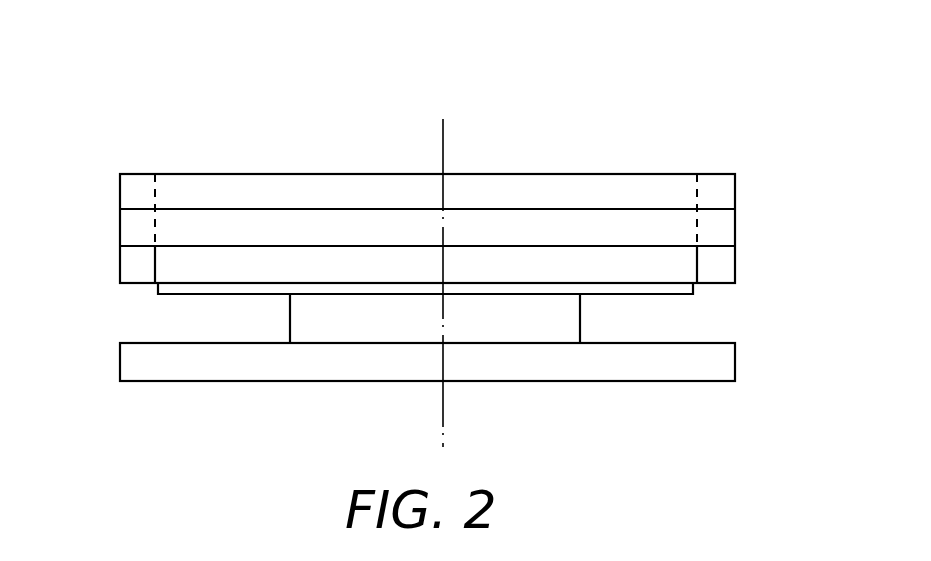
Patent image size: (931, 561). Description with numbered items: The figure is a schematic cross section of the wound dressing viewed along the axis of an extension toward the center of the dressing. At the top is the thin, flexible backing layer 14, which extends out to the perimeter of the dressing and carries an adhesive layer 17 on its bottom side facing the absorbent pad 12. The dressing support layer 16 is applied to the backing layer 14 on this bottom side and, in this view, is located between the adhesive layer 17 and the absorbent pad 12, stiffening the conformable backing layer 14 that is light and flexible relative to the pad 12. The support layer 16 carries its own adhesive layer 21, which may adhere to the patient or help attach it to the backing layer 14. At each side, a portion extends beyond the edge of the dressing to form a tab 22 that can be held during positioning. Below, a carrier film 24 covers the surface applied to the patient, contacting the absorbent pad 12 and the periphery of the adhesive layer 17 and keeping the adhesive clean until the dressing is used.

The absorbent pad 12 is at (507, 328).
The backing layer 14 is at (715, 186).
The dressing support layer 16 is at (655, 272).
The adhesive layer 17 is at (718, 226).
The adhesive layer 21 is at (227, 290).
The tab 22 is at (132, 286).
The carrier film 24 is at (155, 383).